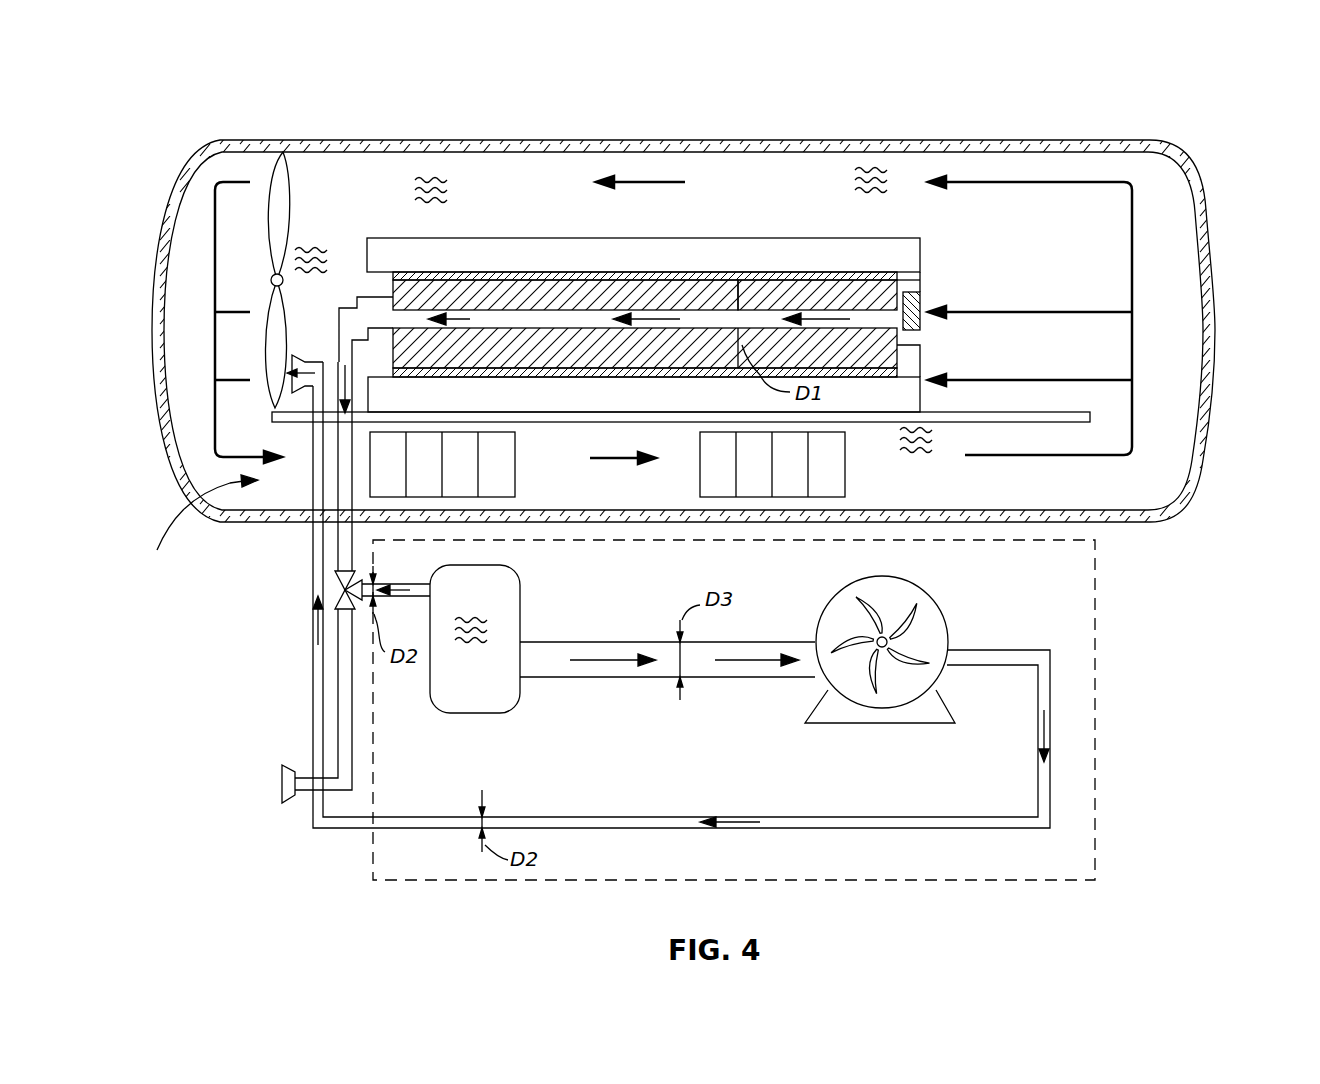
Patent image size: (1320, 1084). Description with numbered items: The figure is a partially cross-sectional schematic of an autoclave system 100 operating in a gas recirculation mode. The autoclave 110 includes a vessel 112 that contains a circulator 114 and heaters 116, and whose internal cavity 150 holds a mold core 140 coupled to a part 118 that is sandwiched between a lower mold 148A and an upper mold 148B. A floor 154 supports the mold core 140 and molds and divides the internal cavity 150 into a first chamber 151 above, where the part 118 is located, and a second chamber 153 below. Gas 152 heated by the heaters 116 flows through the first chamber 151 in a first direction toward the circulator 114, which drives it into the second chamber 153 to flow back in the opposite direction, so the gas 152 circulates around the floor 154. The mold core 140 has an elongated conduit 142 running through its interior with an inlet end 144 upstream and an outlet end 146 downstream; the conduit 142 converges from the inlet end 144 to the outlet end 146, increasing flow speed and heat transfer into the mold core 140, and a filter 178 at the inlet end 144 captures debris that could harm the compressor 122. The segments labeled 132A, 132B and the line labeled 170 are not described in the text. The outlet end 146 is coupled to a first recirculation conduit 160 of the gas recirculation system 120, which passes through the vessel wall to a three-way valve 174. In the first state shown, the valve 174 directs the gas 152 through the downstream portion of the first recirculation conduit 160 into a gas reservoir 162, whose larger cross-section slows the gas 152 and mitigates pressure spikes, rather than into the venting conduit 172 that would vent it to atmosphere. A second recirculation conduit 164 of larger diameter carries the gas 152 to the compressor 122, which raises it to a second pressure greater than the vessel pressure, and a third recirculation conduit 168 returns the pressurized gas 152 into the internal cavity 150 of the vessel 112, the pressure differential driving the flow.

The autoclave system 100 is at (1180, 80).
The autoclave 110 is at (1195, 125).
The vessel 112 is at (1070, 140).
The circulator 114 is at (284, 192).
The heater 116 is at (515, 474).
The part 118 is at (487, 262).
The gas recirculation system 120 is at (1100, 600).
The compressor 122 is at (912, 598).
The rotor segment 132A is at (383, 297).
The rotor segment 132B is at (652, 278).
The mold core 140 is at (517, 268).
The conduit 142 is at (762, 300).
The inlet end 144 is at (898, 284).
The outlet end 146 is at (438, 372).
The lower mold 148A is at (604, 400).
The upper mold 148B is at (445, 255).
The internal cavity 150 is at (765, 201).
The first chamber 151 is at (1125, 220).
The gas 152 is at (877, 156).
The second chamber 153 is at (186, 519).
The floor 154 is at (1075, 424).
The first recirculation conduit 160 is at (330, 572).
The gas reservoir 162 is at (500, 598).
The second recirculation conduit 164 is at (728, 648).
The third recirculation conduit 168 is at (850, 812).
The supply pipe 170 is at (313, 690).
The venting conduit 172 is at (345, 745).
The valve 174 is at (342, 593).
The filter 178 is at (918, 292).